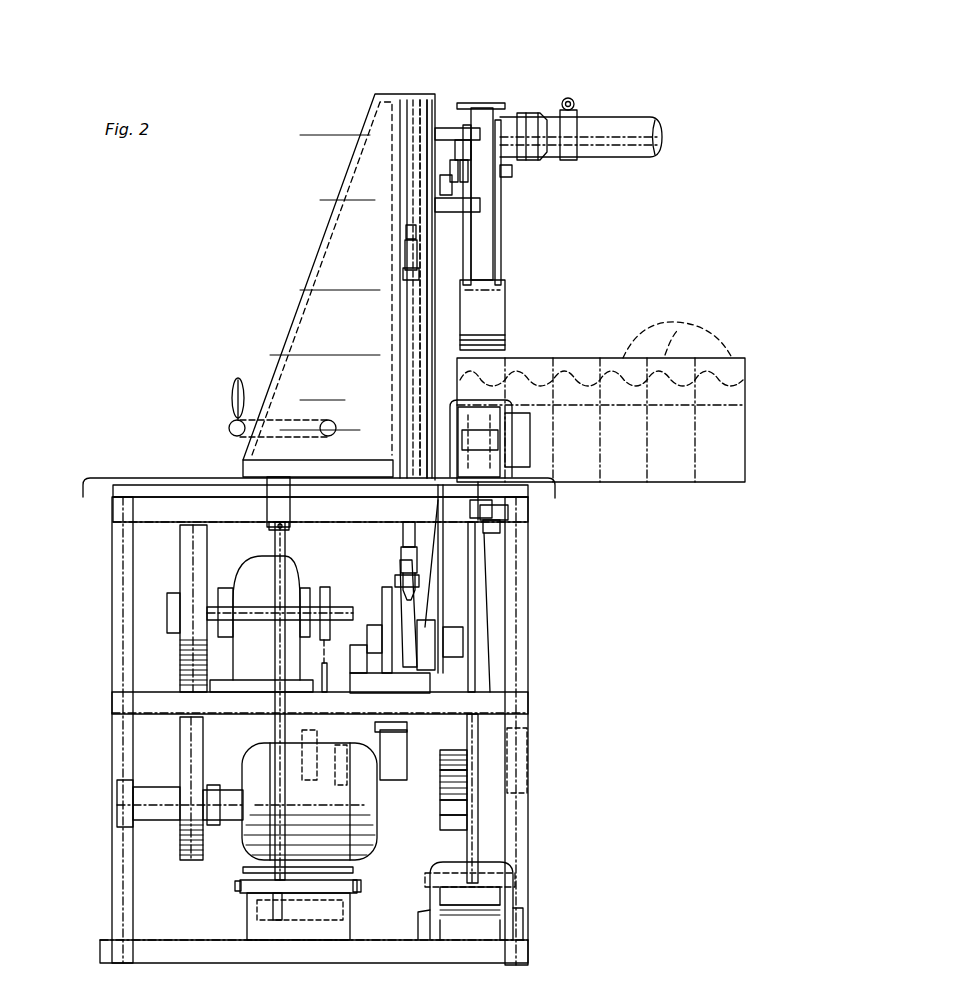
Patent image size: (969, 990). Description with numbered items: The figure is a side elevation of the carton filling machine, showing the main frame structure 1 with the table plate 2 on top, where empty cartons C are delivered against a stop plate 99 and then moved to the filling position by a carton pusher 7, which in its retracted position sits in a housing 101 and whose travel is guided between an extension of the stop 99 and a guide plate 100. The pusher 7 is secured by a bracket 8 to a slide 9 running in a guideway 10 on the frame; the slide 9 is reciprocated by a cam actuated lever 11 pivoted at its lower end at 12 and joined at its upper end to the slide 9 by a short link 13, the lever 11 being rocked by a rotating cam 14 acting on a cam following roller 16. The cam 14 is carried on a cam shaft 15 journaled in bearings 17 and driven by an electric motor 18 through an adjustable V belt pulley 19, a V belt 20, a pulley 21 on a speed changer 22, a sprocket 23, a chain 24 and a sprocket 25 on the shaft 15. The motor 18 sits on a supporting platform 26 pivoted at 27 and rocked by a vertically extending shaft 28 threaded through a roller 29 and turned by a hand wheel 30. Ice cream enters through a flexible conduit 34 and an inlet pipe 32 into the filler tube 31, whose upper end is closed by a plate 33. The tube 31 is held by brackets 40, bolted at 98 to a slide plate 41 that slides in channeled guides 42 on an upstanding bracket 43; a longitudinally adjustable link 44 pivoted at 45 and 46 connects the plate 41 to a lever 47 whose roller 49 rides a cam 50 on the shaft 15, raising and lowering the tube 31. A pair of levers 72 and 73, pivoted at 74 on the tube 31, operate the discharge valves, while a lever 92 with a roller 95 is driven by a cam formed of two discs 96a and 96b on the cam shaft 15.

The main frame structure 1 is at (112, 693).
The table plate 2 is at (178, 478).
The carton pusher 7 is at (515, 390).
The bracket 8 is at (476, 493).
The slide 9 is at (488, 530).
The guideway 10 is at (495, 528).
The cam actuated lever 11 is at (475, 626).
The pivot 12 is at (430, 862).
The short link 13 is at (478, 520).
The rotating cam 14 is at (440, 800).
The cam shaft 15 is at (410, 752).
The cam following roller 16 is at (467, 770).
The bearings 17 is at (340, 785).
The electric motor 18 is at (255, 752).
The adjustable V belt pulley 19 is at (175, 770).
The V belt 20 is at (180, 730).
The pulley 21 is at (180, 563).
The speed changer 22 is at (256, 556).
The sprocket 23 is at (330, 595).
The chain 24 is at (338, 660).
The sprocket 25 is at (326, 692).
The supporting platform 26 is at (243, 867).
The pivot 27 is at (362, 892).
The vertically extending shaft 28 is at (275, 730).
The roller 29 is at (318, 888).
The hand wheel 30 is at (230, 426).
The filler tube 31 is at (485, 240).
The inlet pipe 32 is at (515, 117).
The plate 33 is at (485, 103).
The flexible conduit 34 is at (636, 117).
The brackets 40 is at (445, 176).
The slide plate 41 is at (418, 100).
The channeled guides 42 is at (428, 98).
The upstanding bracket 43 is at (328, 232).
The longitudinally adjustable link 44 is at (400, 538).
The pivot 45 is at (405, 258).
The pivot 46 is at (403, 580).
The lever 47 is at (384, 588).
The roller 49 is at (372, 630).
The cam 50 is at (372, 730).
The lever 72 is at (466, 260).
The lever 73 is at (501, 222).
The pivot mountings 74 is at (462, 206).
The lever 92 is at (440, 590).
The roller 95 is at (445, 770).
The disc 96a is at (442, 825).
The disc 96b is at (445, 838).
The bolts 98 is at (410, 150).
The stop plate 99 is at (487, 430).
The guide plate 100 is at (470, 445).
The housing 101 is at (490, 330).
The empty cartons C is at (677, 336).